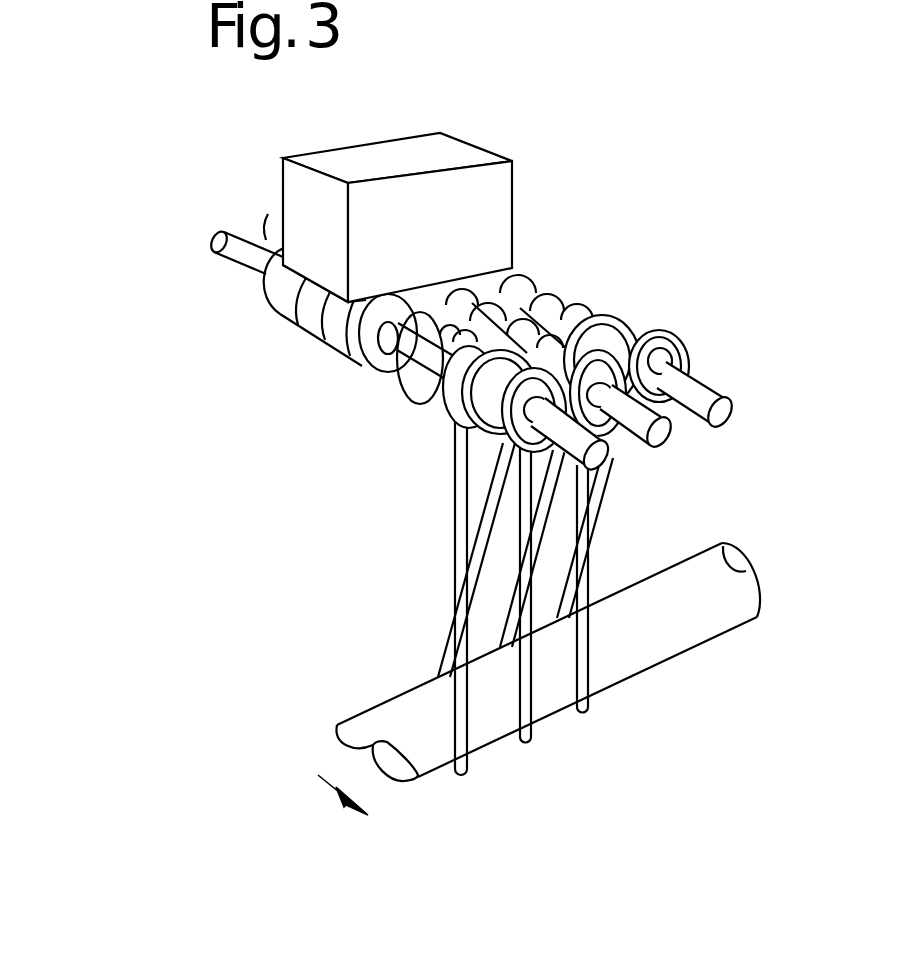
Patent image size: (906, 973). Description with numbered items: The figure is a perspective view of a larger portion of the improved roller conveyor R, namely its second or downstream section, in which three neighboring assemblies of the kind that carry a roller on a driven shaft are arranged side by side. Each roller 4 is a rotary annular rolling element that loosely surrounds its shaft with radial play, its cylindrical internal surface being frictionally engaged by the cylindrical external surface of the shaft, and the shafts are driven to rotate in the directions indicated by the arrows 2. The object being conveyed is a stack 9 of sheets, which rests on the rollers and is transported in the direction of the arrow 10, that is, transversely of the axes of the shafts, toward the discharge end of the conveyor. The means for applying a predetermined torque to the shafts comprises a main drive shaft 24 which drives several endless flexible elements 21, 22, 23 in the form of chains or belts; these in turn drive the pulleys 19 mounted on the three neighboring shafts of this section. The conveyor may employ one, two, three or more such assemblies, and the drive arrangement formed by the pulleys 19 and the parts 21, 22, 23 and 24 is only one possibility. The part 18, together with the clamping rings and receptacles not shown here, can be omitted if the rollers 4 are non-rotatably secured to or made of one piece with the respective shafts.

The arrows indicating directions of rotation 2 is at (165, 232).
The roller 4 is at (280, 314).
The stack of sheets 9 is at (455, 133).
The arrow indicating direction of transport 10 is at (525, 201).
The part associated with roller and shaft 18 is at (424, 406).
The pulley 19 is at (685, 320).
The endless flexible element 21 is at (447, 642).
The endless flexible element 22 is at (508, 612).
The endless flexible element 23 is at (582, 557).
The main drive shaft 24 is at (685, 635).
The roller conveyor R is at (105, 356).